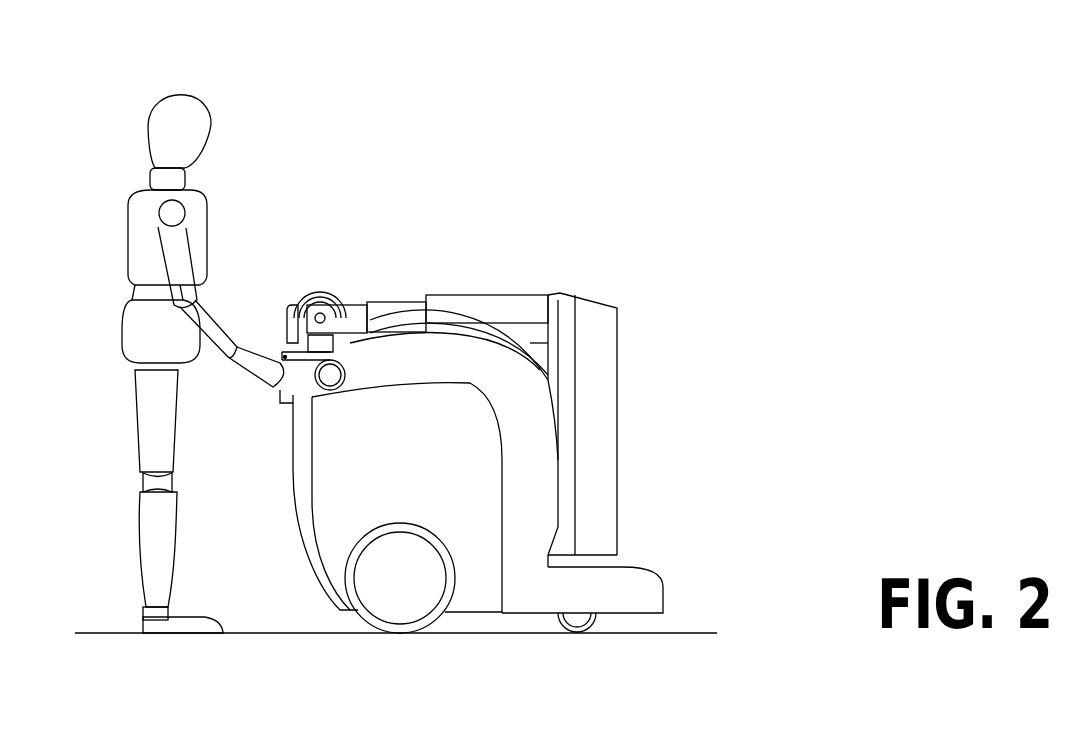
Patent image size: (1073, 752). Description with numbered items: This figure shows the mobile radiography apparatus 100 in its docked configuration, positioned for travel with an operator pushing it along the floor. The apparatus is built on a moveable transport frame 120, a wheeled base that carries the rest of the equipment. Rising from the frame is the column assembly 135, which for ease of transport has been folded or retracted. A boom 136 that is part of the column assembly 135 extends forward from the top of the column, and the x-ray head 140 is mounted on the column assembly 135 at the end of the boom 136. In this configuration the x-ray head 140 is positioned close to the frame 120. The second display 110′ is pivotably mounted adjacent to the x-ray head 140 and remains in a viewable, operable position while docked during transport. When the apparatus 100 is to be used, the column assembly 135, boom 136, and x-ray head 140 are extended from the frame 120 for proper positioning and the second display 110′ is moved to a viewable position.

The mobile radiography apparatus 100 is at (772, 235).
The second display 110′ is at (288, 318).
The moveable transport frame 120 is at (391, 508).
The column assembly 135 is at (440, 293).
The boom 136 is at (380, 300).
The x-ray head 140 is at (300, 302).